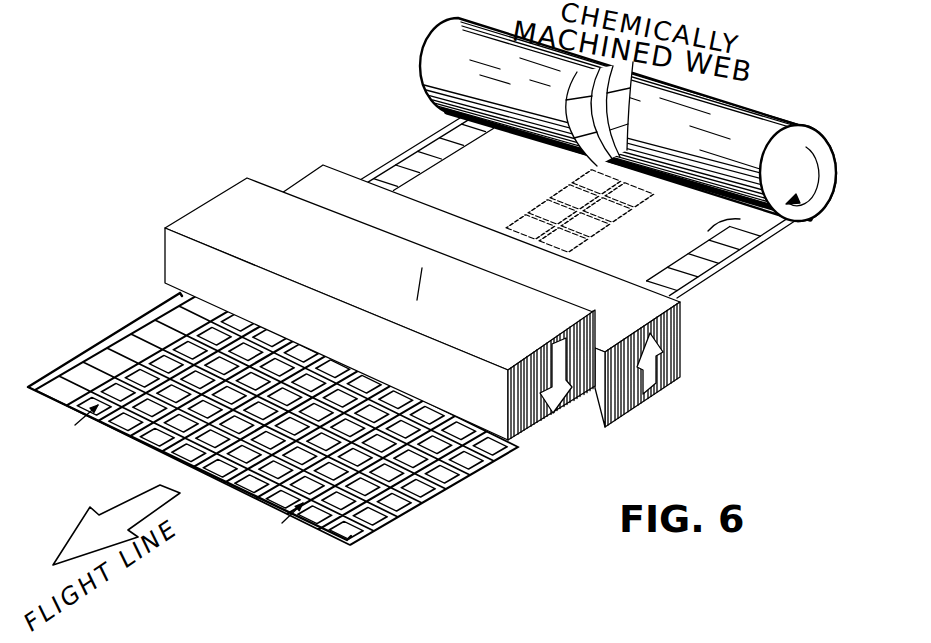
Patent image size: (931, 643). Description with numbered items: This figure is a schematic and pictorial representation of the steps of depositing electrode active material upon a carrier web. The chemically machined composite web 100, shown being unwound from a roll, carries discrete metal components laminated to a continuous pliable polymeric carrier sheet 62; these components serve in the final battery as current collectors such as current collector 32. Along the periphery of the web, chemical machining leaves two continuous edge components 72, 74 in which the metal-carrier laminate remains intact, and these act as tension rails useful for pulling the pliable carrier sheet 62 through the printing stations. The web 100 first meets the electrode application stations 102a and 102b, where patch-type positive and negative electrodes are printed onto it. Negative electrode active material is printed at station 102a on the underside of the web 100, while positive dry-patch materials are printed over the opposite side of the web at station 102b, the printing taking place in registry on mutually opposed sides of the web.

The current collector 32 is at (612, 119).
The polymeric carrier sheet 62 is at (777, 233).
The edge component 72 is at (725, 273).
The edge component 74 is at (410, 150).
The chemically machined composite web 100 is at (763, 122).
The electrode printing station 102a is at (633, 402).
The electrode printing station 102b is at (540, 420).